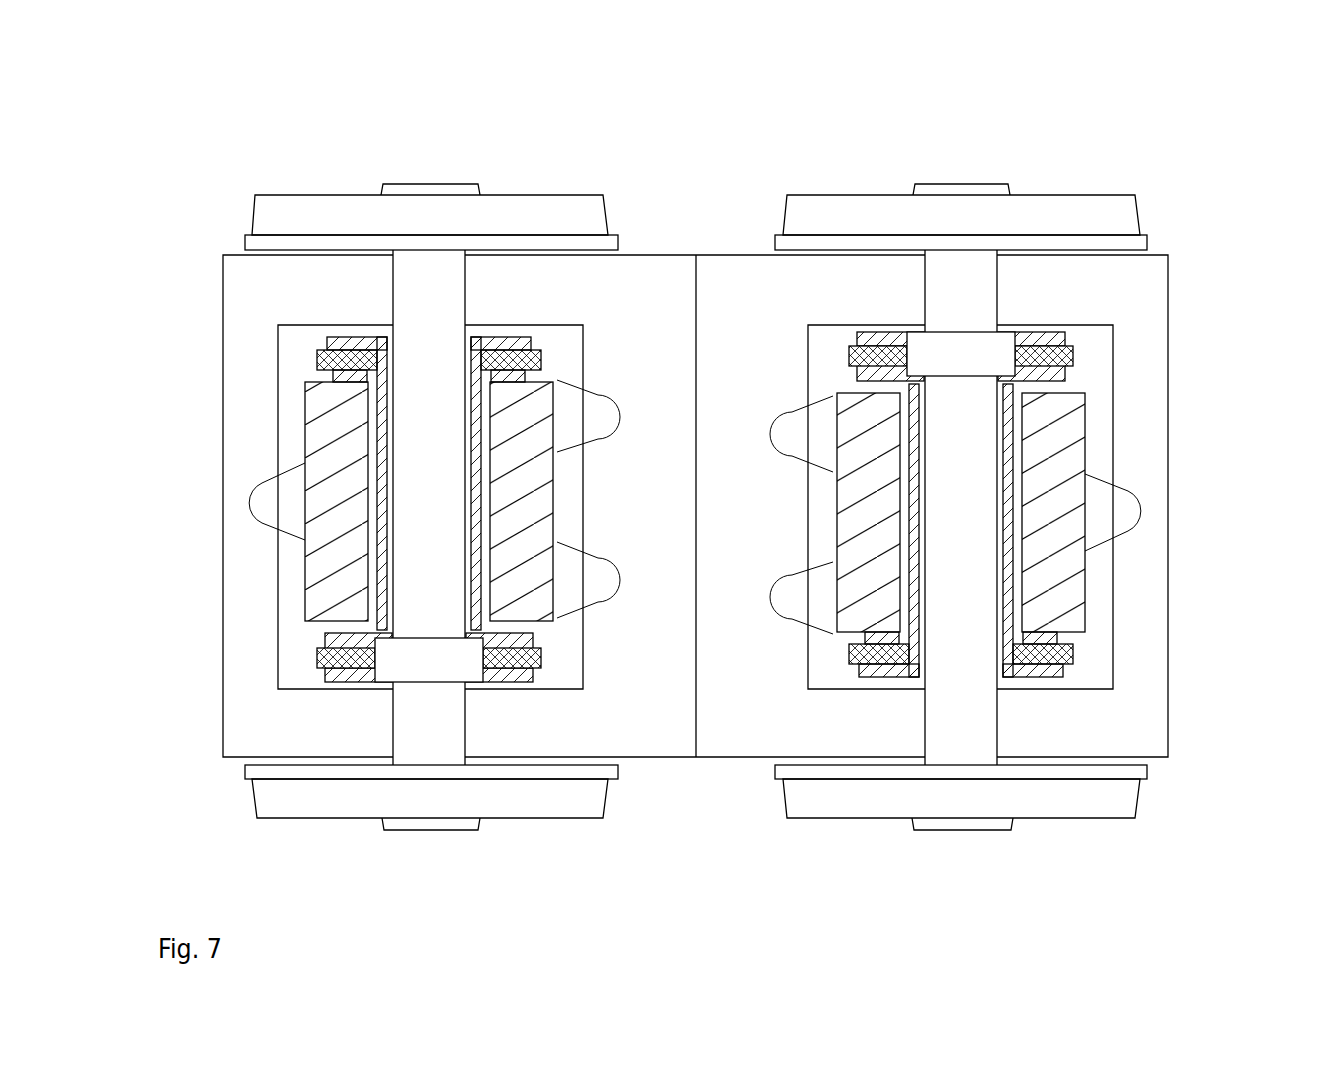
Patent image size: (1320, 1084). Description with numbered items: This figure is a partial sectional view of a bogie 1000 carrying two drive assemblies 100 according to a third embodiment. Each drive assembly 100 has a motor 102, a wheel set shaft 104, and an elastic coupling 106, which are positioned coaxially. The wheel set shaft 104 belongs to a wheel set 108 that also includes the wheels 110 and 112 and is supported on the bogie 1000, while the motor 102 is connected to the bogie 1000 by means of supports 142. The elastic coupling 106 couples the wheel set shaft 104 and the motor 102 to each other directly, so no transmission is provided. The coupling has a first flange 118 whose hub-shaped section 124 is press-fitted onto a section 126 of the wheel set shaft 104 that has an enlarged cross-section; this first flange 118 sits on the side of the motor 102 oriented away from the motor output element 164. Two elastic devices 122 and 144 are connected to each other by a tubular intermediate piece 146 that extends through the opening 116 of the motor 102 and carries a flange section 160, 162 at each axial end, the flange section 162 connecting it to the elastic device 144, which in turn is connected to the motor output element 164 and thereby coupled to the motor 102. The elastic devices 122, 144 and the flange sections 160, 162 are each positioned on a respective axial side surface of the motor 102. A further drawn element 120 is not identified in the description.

The bogie 1000 is at (760, 147).
The drive assembly 100 is at (225, 207).
The motor 102 is at (287, 537).
The wheel set shaft 104 is at (407, 275).
The elastic coupling 106 is at (265, 633).
The wheel set 108 is at (463, 168).
The wheel 110 is at (573, 223).
The wheel 112 is at (318, 798).
The opening 116 is at (365, 400).
The first flange 118 is at (350, 673).
The magnet 120 is at (345, 575).
The elastic device 122 is at (338, 603).
The hub-shaped section 124 is at (392, 683).
The section of the wheel set shaft 126 is at (470, 662).
The support 142 is at (265, 497).
The second elastic device 144 is at (320, 353).
The intermediate piece 146 is at (382, 445).
The flange section 160 is at (325, 638).
The flange section 162 is at (355, 337).
The motor output element 164 is at (335, 377).